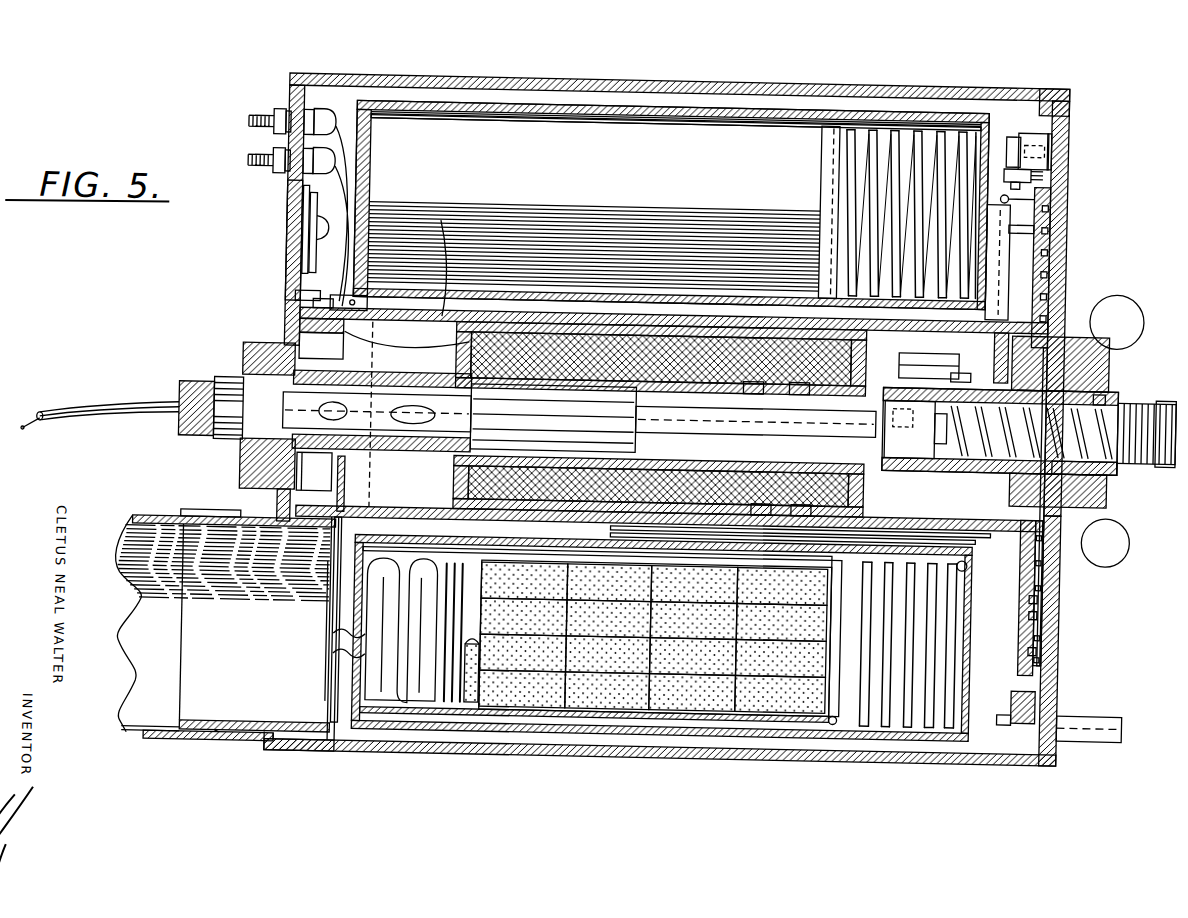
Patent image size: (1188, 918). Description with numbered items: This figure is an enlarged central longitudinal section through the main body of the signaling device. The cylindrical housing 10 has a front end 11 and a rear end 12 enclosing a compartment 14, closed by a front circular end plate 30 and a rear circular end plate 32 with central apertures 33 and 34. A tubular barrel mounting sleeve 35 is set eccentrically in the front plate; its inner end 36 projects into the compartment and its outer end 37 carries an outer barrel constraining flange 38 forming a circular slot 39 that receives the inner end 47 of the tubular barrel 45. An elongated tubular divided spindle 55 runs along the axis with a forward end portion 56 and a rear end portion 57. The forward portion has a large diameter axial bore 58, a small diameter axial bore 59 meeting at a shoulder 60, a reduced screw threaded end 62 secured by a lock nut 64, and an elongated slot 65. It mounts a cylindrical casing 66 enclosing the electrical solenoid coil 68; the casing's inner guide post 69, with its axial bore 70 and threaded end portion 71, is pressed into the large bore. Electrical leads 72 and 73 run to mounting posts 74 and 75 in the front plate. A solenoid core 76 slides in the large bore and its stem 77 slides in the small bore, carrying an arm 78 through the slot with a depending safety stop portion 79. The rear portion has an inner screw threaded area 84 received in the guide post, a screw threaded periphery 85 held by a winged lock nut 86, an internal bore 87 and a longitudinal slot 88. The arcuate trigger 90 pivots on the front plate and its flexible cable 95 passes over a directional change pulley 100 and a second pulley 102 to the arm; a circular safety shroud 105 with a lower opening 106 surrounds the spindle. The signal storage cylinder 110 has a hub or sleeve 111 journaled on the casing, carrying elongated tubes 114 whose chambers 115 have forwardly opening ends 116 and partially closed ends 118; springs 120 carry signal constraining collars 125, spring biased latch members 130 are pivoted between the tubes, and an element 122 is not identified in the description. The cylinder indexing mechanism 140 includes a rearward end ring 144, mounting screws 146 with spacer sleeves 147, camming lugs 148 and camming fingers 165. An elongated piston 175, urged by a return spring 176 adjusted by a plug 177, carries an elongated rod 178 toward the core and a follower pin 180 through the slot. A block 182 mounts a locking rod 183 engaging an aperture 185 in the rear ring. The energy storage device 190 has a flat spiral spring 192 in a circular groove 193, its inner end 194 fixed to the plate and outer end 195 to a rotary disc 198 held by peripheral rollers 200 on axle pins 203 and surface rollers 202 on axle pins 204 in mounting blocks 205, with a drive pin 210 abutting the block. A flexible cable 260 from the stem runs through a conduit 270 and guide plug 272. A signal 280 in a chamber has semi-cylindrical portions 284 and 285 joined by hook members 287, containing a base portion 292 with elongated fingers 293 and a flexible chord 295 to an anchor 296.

The cylindrical housing 10 is at (1062, 82).
The front end 11 is at (292, 95).
The rear end 12 is at (1068, 110).
The compartment 14 is at (615, 74).
The front circular end plate 30 is at (296, 260).
The rear circular end plate 32 is at (1070, 622).
The aperture 33 is at (305, 338).
The aperture 34 is at (1063, 414).
The tubular barrel mounting sleeve 35 is at (260, 722).
The inner end 36 is at (330, 750).
The outer end 37 is at (195, 718).
The outer barrel constraining flange 38 is at (165, 741).
The circular slot 39 is at (232, 741).
The elongated tubular barrel 45 is at (145, 518).
The inner end 47 is at (216, 511).
The elongated tubular divided spindle 55 is at (661, 359).
The forward end portion 56 is at (335, 303).
The rear end portion 57 is at (1145, 386).
The large diameter axial bore 58 is at (660, 359).
The small diameter axial bore 59 is at (248, 450).
The shoulder 60 is at (496, 392).
The reduced diameter outer screw threaded end 62 is at (252, 367).
The lock nut 64 is at (240, 378).
The elongated slot 65 is at (462, 456).
The elongated cylindrical casing 66 is at (462, 491).
The electrical solenoid coil 68 is at (630, 482).
The inner guide post 69 is at (806, 372).
The elongated axial bore 70 is at (762, 372).
The enlarged diameter threaded end portion 71 is at (810, 494).
The electrical lead 72 is at (430, 346).
The electrical lead 73 is at (478, 348).
The mounting post 74 is at (280, 114).
The mounting post 75 is at (280, 172).
The solenoid core 76 is at (574, 414).
The stem 77 is at (392, 448).
The arm 78 is at (314, 471).
The safety stop portion 79 is at (349, 490).
The inner screw threaded area 84 is at (772, 494).
The screw threaded periphery 85 is at (1128, 377).
The winged lock nut 86 is at (1148, 300).
The internal bore 87 is at (1110, 378).
The longitudinally extended slot 88 is at (957, 378).
The arcuate trigger 90 is at (320, 525).
The flexible cable 95 is at (306, 200).
The directional change pulley 100 is at (313, 230).
The second pulley 102 is at (318, 303).
The circular safety shroud 105 is at (300, 296).
The lower opening 106 is at (286, 500).
The signal storage cylinder 110 is at (520, 99).
The hub or sleeve 111 is at (434, 258).
The elongated tubes 114 is at (745, 108).
The elongated chambers 115 is at (690, 109).
The forwardly opening ends 116 is at (366, 130).
The partially closed ends 118 is at (988, 108).
The springs 120 is at (905, 118).
The spring hook 122 is at (976, 556).
The signal constraining collars 125 is at (823, 170).
The spring biased latch members 130 is at (350, 295).
The cylinder indexing mechanism 140 is at (1053, 300).
The rearward end ring 144 is at (1031, 432).
The mounting screws 146 is at (1000, 522).
The spacer sleeves 147 is at (985, 531).
The camming lugs 148 is at (929, 354).
The camming fingers 165 is at (1000, 345).
The elongated piston 175 is at (955, 414).
The return spring 176 is at (1115, 458).
The plug 177 is at (1175, 449).
The elongated rod 178 is at (696, 426).
The follower pin 180 is at (865, 376).
The block 182 is at (1053, 205).
The locking rod 183 is at (1053, 186).
The aperture 185 is at (1015, 300).
The energy storage device 190 is at (1044, 598).
The flat spiral spring 192 is at (1053, 585).
The circular groove 193 is at (1053, 600).
The inner end 194 is at (1105, 543).
The outer end 195 is at (1053, 637).
The rotary disc 198 is at (1030, 655).
The peripheral rollers 200 is at (1030, 708).
The surface rollers 202 is at (1036, 160).
The axle pins 203 is at (1077, 700).
The axle pins 204 is at (1015, 122).
The mounting blocks 205 is at (1054, 130).
The drive pin 210 is at (1038, 214).
The elongated flexible cable 260 is at (32, 436).
The elongated conduit 270 is at (110, 410).
The guide plug 272 is at (190, 440).
The signal 280 is at (594, 161).
The semi-cylindrical portion 284 is at (482, 112).
The semi-cylindrical portion 285 is at (641, 225).
The hook members 287 is at (345, 642).
The base portion 292 is at (470, 700).
The elongated fingers 293 is at (720, 705).
The flexible chord 295 is at (484, 700).
The anchor 296 is at (430, 700).